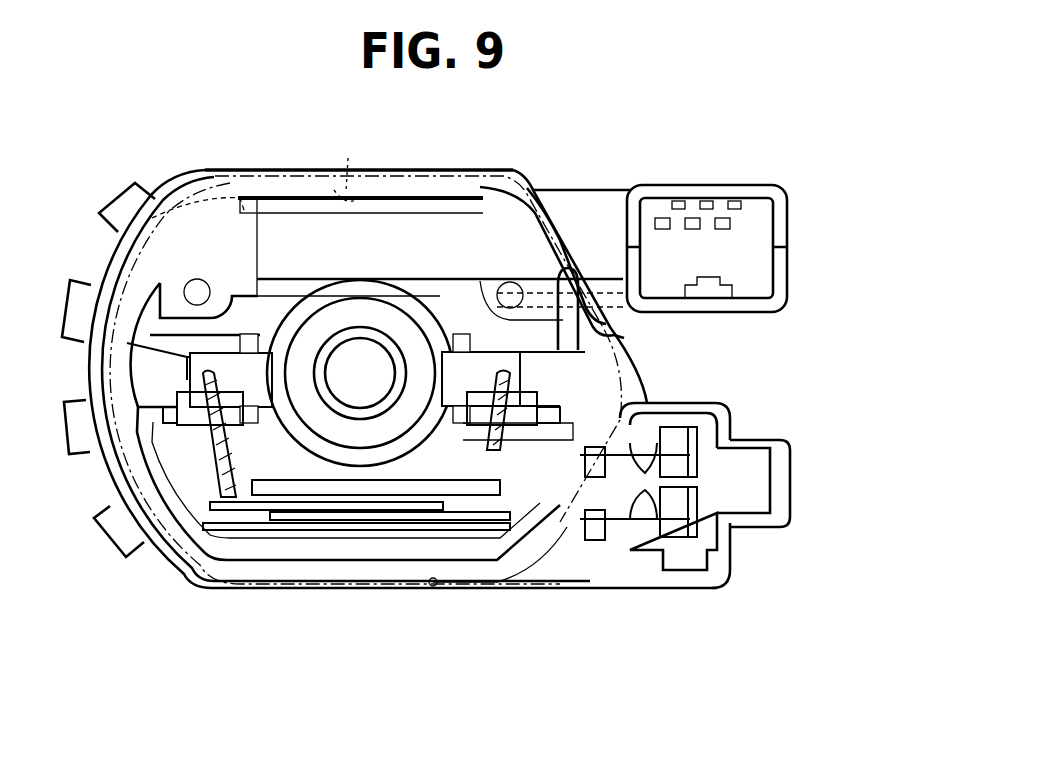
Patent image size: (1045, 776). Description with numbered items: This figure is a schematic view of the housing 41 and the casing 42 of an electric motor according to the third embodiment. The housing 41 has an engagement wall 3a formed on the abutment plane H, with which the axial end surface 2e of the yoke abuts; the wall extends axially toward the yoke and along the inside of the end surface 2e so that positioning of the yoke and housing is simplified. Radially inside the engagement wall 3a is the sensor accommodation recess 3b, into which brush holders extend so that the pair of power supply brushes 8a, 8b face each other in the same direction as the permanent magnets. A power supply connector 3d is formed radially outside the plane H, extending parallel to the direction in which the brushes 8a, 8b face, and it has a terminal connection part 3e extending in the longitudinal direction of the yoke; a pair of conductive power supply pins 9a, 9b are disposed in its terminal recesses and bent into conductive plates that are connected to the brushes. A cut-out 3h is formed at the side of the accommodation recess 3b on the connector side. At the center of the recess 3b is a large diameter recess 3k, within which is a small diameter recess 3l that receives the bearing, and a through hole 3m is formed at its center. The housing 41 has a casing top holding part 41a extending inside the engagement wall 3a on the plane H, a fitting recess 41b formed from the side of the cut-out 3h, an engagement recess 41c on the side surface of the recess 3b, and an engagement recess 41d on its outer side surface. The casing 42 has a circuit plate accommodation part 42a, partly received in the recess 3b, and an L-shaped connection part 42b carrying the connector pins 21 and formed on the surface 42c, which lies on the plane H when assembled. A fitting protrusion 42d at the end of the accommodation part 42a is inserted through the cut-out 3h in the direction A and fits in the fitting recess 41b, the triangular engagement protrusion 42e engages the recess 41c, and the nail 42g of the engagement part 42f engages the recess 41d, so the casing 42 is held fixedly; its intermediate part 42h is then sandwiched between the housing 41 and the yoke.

The engagement wall 3a is at (389, 378).
The housing 41 is at (360, 162).
The fitting protrusion 42d is at (230, 171).
The circuit plate accommodation part 42a is at (281, 212).
The engagement recess 41c is at (348, 160).
The engagement protrusion 42e is at (343, 230).
The surface 42c is at (440, 255).
The casing 42 is at (555, 235).
The intermediate part 42h is at (566, 226).
The engagement part 42f is at (591, 282).
The nail 42g is at (551, 276).
The connection part 42b is at (736, 251).
The connector pins 21 is at (698, 249).
The direction A is at (823, 206).
The sensor accommodation recess 3b is at (363, 301).
The cut-out 3h is at (649, 337).
The casing top holding part 41a is at (210, 309).
The fitting recess 41b is at (198, 251).
The power supply brush 8b is at (199, 375).
The power supply brush 8a is at (513, 379).
The engagement recess 41d is at (367, 378).
The through hole 3m is at (360, 373).
The large diameter recess 3k is at (228, 434).
The small diameter recess 3l is at (482, 426).
The power supply connector 3d is at (596, 515).
The conductive power supply pin 9a is at (672, 433).
The conductive power supply pin 9b is at (675, 526).
The terminal connection part 3e is at (775, 483).
The abutment plane H is at (356, 553).
The axial end surface 2e is at (498, 577).